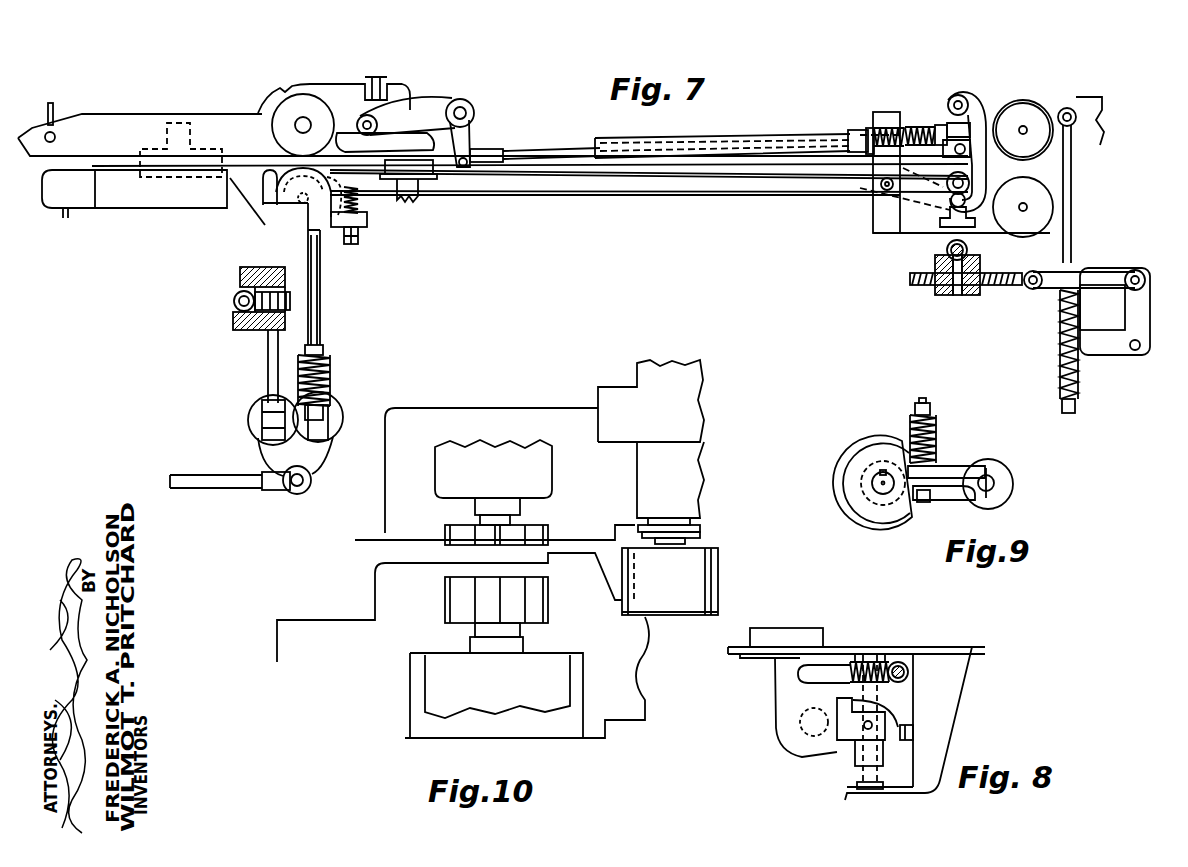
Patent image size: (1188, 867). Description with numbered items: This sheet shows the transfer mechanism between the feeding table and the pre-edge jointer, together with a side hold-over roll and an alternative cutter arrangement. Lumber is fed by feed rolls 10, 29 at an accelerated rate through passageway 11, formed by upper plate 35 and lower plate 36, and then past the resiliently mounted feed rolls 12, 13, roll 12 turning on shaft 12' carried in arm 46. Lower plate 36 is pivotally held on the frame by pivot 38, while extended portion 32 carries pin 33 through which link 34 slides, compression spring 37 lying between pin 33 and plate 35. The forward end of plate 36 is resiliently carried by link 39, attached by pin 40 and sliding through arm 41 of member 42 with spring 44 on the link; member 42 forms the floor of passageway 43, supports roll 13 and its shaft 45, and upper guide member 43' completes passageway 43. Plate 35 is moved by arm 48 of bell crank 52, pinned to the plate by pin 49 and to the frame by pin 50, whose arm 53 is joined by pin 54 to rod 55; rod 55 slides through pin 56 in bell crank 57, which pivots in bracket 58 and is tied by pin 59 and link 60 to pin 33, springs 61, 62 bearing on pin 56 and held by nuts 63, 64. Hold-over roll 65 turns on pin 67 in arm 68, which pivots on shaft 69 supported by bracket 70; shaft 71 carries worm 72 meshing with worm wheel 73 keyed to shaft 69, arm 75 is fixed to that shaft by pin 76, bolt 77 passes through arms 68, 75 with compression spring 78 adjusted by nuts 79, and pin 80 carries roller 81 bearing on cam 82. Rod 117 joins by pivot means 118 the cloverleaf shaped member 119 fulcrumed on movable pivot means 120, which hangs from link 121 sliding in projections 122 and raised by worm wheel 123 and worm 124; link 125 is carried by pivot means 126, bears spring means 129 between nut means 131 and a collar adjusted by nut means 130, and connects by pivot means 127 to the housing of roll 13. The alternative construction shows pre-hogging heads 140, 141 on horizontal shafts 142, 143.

In FIG. 7, the feed roll 10 is at (1010, 105).
In FIG. 7, the passageway 11 is at (680, 150).
In FIG. 7, the feed roll 12 is at (289, 114).
In FIG. 10, the feed roll 12 is at (687, 581).
In FIG. 7, the shaft 12' is at (305, 92).
In FIG. 10, the shaft 12' is at (656, 574).
In FIG. 7, the feed roll 13 is at (297, 172).
In FIG. 7, the feed roll 29 is at (1020, 192).
In FIG. 7, the extended portion 32 is at (976, 104).
In FIG. 7, the pin 33 is at (955, 96).
In FIG. 7, the link 34 is at (995, 142).
In FIG. 7, the upper plate 35 is at (445, 150).
In FIG. 7, the lower plate 36 is at (765, 176).
In FIG. 7, the compression spring 37 is at (942, 136).
In FIG. 7, the pivot 38 is at (950, 190).
In FIG. 7, the link 39 is at (352, 246).
In FIG. 7, the pin 40 is at (360, 186).
In FIG. 7, the arm 41 is at (359, 231).
In FIG. 7, the member 42 is at (125, 208).
In FIG. 10, the member 42 is at (582, 553).
In FIG. 7, the passageway 43 is at (140, 128).
In FIG. 7, the upper guide member 43' is at (181, 132).
In FIG. 7, the spring 44 is at (420, 200).
In FIG. 7, the shaft 45 is at (300, 201).
In FIG. 7, the arm 46 is at (340, 113).
In FIG. 10, the arm 46 is at (700, 460).
In FIG. 7, the arm 48 is at (428, 110).
In FIG. 7, the pin 49 is at (372, 122).
In FIG. 7, the pin 50 is at (466, 108).
In FIG. 7, the bell crank 52 is at (475, 108).
In FIG. 7, the arm 53 is at (471, 140).
In FIG. 7, the pin 54 is at (466, 164).
In FIG. 7, the rod 55 is at (545, 148).
In FIG. 7, the pin 56 is at (900, 128).
In FIG. 7, the bell crank 57 is at (880, 180).
In FIG. 7, the bracket 58 is at (873, 222).
In FIG. 7, the pin 59 is at (953, 212).
In FIG. 7, the link 60 is at (975, 168).
In FIG. 7, the spring 61 is at (870, 130).
In FIG. 7, the spring 62 is at (932, 146).
In FIG. 7, the nut 63 is at (847, 138).
In FIG. 7, the nut 64 is at (945, 140).
In FIG. 9, the hold-over roll 65 is at (850, 478).
In FIG. 8, the hold-over roll 65 is at (800, 630).
In FIG. 9, the pin 67 is at (878, 490).
In FIG. 9, the arm 68 is at (988, 506).
In FIG. 8, the arm 68 is at (790, 698).
In FIG. 9, the shaft 69 is at (1000, 483).
In FIG. 8, the shaft 69 is at (868, 776).
In FIG. 8, the bracket 70 is at (940, 740).
In FIG. 9, the shaft 71 is at (940, 492).
In FIG. 8, the shaft 71 is at (912, 678).
In FIG. 8, the worm 72 is at (906, 666).
In FIG. 8, the worm wheel 73 is at (885, 664).
In FIG. 9, the arm 75 is at (955, 466).
In FIG. 8, the arm 75 is at (845, 727).
In FIG. 9, the pin 76 is at (992, 476).
In FIG. 8, the pin 76 is at (865, 730).
In FIG. 9, the bolt 77 is at (920, 504).
In FIG. 8, the bolt 77 is at (800, 725).
In FIG. 9, the compression spring 78 is at (940, 444).
In FIG. 9, the nuts 79 is at (930, 412).
In FIG. 8, the pin 80 is at (913, 736).
In FIG. 8, the roller 81 is at (912, 730).
In FIG. 8, the cam 82 is at (898, 705).
In FIG. 7, the rod 117 is at (222, 480).
In FIG. 7, the pivot means 118 is at (311, 481).
In FIG. 7, the cloverleaf shaped member 119 is at (310, 466).
In FIG. 7, the movable pivot means 120 is at (262, 420).
In FIG. 7, the link 121 is at (270, 373).
In FIG. 7, the projections 122 is at (250, 328).
In FIG. 7, the worm wheel 123 is at (290, 292).
In FIG. 7, the worm 124 is at (234, 301).
In FIG. 7, the link 125 is at (320, 327).
In FIG. 7, the pivot means 126 is at (332, 424).
In FIG. 7, the pivot means 127 is at (368, 220).
In FIG. 7, the spring means 129 is at (330, 382).
In FIG. 7, the nut means 130 is at (323, 350).
In FIG. 7, the nut means 131 is at (330, 416).
In FIG. 10, the pre-hogging head 140 is at (488, 414).
In FIG. 10, the pre-hogging head 141 is at (462, 605).
In FIG. 10, the horizontal shaft 142 is at (505, 532).
In FIG. 10, the horizontal shaft 143 is at (512, 630).